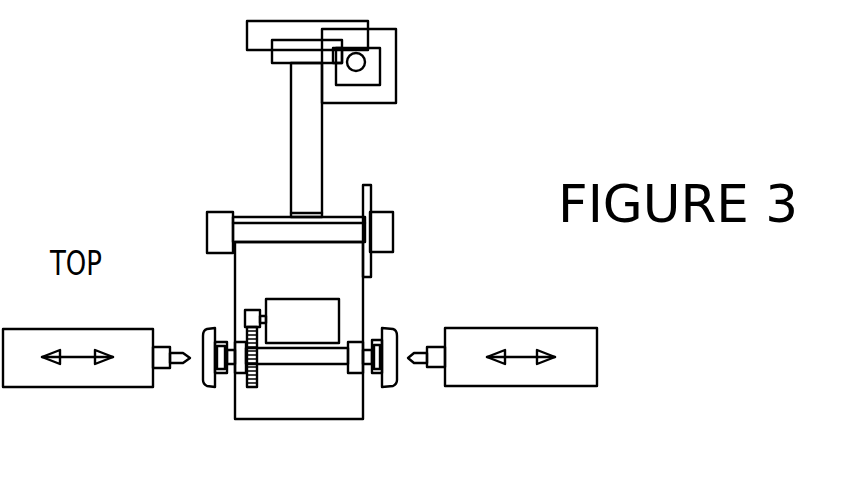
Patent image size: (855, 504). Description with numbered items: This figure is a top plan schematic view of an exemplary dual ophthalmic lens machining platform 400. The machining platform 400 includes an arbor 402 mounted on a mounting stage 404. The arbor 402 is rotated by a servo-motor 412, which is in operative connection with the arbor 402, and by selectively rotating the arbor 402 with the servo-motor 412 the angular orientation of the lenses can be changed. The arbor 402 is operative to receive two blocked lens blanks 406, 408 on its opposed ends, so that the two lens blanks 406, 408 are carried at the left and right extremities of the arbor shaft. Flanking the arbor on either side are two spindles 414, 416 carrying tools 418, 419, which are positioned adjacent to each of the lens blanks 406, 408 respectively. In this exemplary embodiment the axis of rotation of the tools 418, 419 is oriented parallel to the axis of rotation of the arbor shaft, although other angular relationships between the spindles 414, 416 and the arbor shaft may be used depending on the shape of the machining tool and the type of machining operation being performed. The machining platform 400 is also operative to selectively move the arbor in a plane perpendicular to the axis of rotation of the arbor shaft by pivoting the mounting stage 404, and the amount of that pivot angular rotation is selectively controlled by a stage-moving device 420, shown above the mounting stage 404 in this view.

The machining platform 400 is at (488, 85).
The arbor 402 is at (322, 366).
The mounting stage 404 is at (264, 407).
The blocked lens blank 406 is at (213, 327).
The blocked lens blank 408 is at (390, 328).
The servo-motor 412 is at (330, 308).
The spindle 414 is at (160, 369).
The spindle 416 is at (432, 368).
The tool 418 is at (180, 369).
The tool 419 is at (423, 368).
The stage-moving device 420 is at (238, 63).